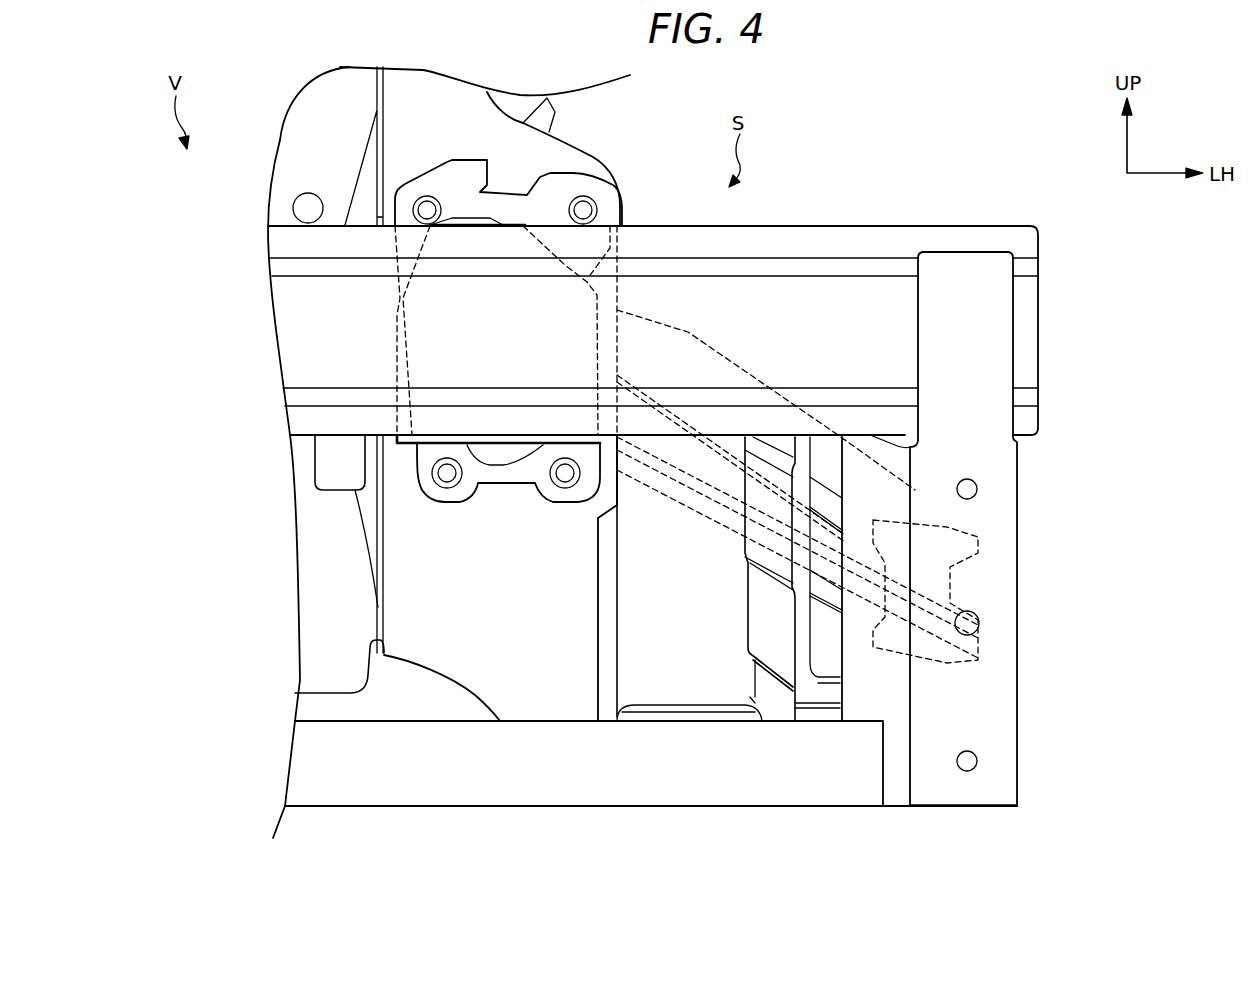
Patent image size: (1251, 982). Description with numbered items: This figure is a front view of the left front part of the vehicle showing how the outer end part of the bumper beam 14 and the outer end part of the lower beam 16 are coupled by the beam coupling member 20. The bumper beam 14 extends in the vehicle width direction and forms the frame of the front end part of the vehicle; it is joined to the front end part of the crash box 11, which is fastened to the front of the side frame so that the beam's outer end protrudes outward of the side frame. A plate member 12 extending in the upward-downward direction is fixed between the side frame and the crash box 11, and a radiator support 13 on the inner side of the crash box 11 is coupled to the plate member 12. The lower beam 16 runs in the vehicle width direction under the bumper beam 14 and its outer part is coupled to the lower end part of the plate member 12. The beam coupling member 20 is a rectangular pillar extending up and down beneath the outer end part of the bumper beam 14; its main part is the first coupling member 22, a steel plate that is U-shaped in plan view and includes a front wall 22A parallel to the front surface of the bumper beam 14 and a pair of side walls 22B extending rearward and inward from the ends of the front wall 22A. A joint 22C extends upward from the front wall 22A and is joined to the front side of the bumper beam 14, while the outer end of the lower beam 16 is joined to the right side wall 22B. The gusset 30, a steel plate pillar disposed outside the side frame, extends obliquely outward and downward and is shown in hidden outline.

The crash box 11 is at (397, 323).
The plate member 12 is at (445, 562).
The radiator support 13 is at (332, 618).
The bumper beam 14 is at (827, 226).
The lower beam 16 is at (604, 806).
The beam coupling member 20 is at (1003, 570).
The first coupling member 22 is at (1000, 570).
The front wall 22A is at (995, 783).
The side walls 22B is at (902, 755).
The joint 22C is at (980, 335).
The gusset 30 is at (950, 605).